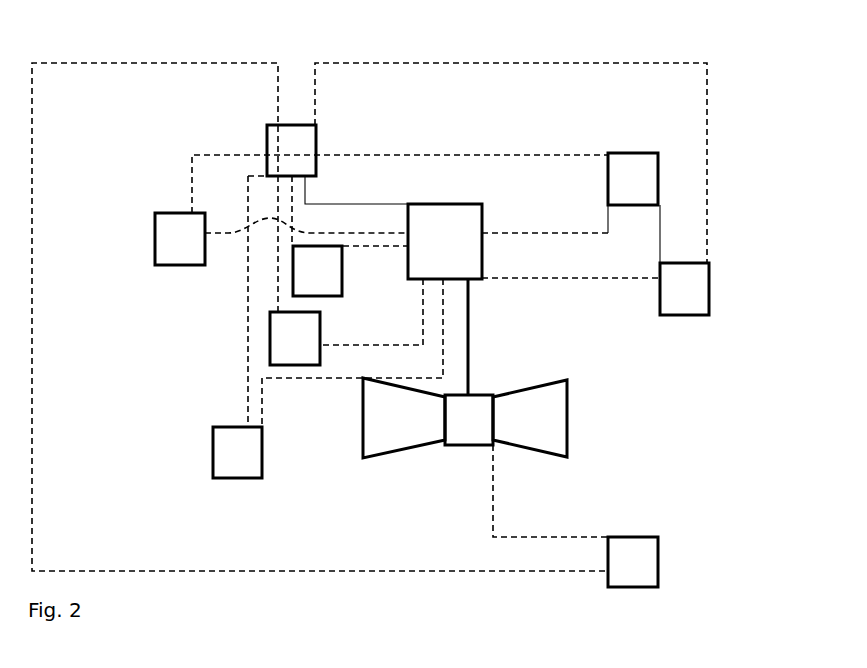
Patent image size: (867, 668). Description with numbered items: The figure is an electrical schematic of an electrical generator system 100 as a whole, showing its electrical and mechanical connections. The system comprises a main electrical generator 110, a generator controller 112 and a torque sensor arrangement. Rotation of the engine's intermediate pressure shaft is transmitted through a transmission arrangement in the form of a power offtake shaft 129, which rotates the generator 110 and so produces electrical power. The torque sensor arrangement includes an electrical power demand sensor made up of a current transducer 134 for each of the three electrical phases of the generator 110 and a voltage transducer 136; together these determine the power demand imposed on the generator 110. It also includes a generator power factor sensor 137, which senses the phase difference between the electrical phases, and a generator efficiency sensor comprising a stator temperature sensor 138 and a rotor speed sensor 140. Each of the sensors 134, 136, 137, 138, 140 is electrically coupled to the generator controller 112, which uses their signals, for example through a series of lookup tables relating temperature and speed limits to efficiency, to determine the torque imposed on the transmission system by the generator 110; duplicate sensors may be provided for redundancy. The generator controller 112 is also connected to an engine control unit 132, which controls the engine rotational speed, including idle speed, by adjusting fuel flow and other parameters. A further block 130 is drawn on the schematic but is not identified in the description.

The electrical generator system 100 is at (686, 394).
The main electrical generator 110 is at (428, 204).
The generator controller 112 is at (267, 133).
The power offtake shaft 129 is at (468, 345).
The sensor 130 is at (658, 168).
The engine control unit 132 is at (658, 567).
The current transducer 134 is at (155, 243).
The voltage transducer 136 is at (293, 257).
The generator power factor sensor 137 is at (270, 349).
The stator temperature sensor 138 is at (213, 458).
The rotor speed sensor 140 is at (709, 290).